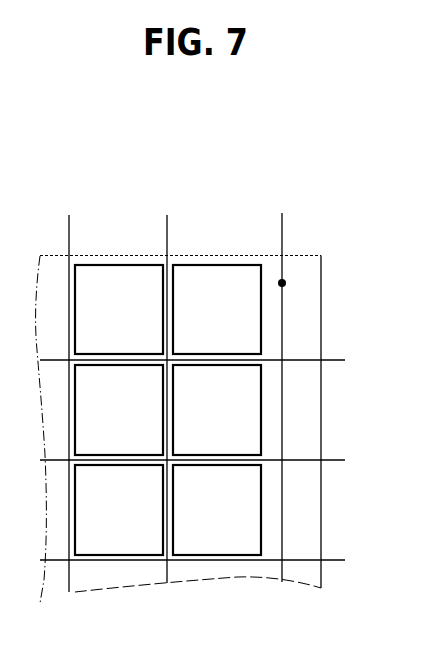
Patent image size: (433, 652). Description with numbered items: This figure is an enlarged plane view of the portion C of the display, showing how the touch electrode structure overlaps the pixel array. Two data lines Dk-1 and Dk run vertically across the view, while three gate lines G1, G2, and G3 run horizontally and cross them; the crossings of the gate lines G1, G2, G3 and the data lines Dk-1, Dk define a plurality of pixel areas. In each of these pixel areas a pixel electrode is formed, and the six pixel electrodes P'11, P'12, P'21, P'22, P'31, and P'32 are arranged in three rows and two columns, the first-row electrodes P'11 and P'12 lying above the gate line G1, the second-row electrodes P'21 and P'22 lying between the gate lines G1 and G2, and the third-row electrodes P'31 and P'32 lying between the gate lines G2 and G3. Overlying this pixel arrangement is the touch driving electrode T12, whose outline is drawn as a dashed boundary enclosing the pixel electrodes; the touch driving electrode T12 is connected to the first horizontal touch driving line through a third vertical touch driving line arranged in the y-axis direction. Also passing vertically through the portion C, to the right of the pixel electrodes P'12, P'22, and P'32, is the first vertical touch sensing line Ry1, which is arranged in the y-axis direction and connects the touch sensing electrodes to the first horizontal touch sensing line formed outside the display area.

The portion C is at (32, 148).
The touch driving electrode T12 is at (223, 255).
The data line Dk-1 is at (70, 391).
The data line Dk is at (168, 387).
The first vertical touch sensing line Ry1 is at (280, 386).
The gate line G1 is at (206, 360).
The gate line G2 is at (206, 460).
The gate line G3 is at (206, 560).
The pixel electrode P'11 is at (119, 309).
The pixel electrode P'12 is at (217, 309).
The pixel electrode P'21 is at (119, 410).
The pixel electrode P'22 is at (217, 410).
The pixel electrode P'31 is at (119, 510).
The pixel electrode P'32 is at (217, 510).